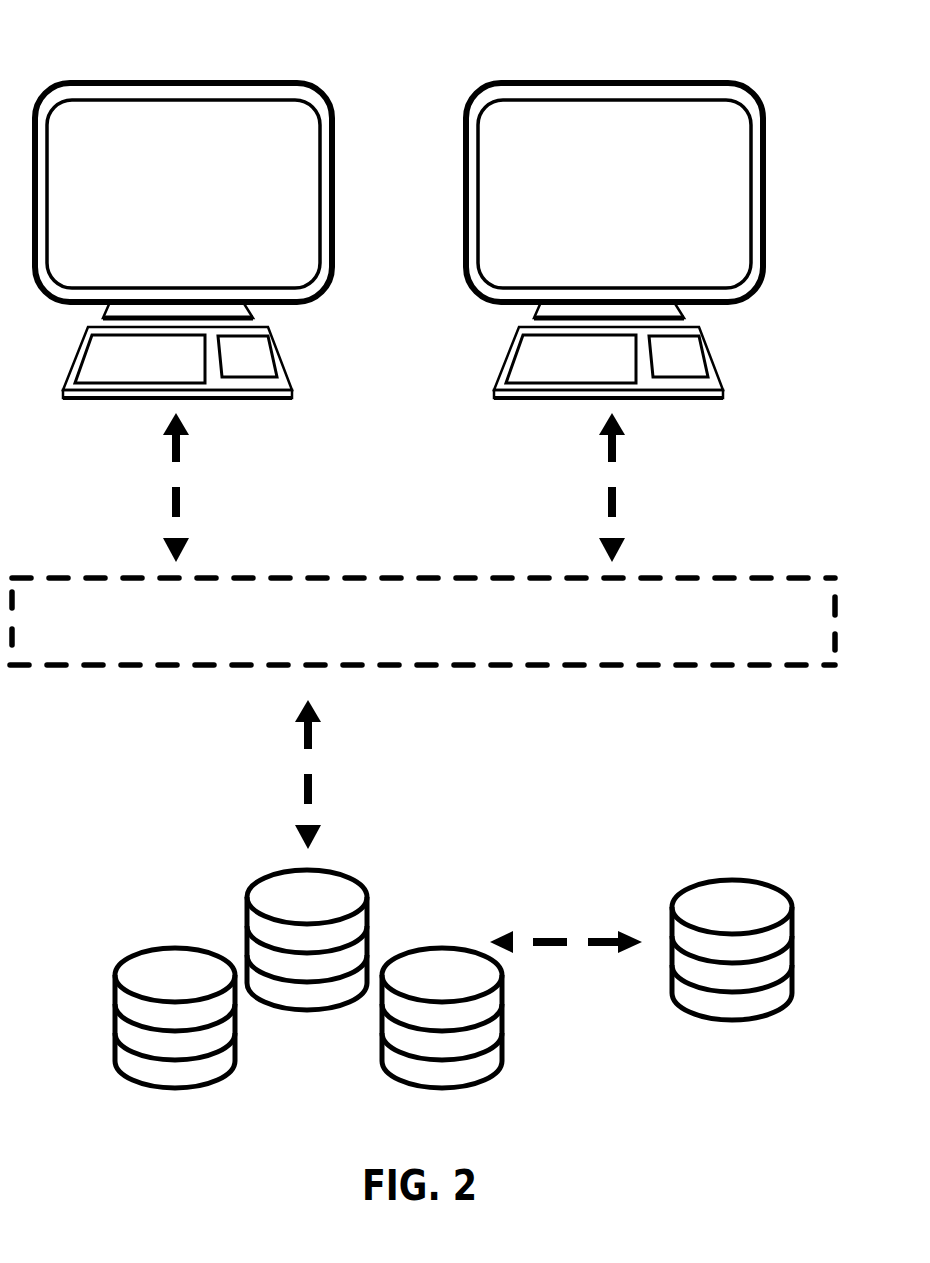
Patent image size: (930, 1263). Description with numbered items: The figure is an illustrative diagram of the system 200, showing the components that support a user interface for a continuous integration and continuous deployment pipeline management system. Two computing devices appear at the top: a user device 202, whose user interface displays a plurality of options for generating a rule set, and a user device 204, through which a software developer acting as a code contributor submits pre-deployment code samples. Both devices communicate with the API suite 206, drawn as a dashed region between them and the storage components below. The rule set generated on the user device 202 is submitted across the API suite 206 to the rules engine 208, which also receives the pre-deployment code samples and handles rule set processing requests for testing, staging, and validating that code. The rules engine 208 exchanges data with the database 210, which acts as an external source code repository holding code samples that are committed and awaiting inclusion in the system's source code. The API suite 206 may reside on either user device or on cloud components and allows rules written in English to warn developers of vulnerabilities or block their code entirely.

The system 200 is at (423, 43).
The user device 202 is at (276, 178).
The user device 204 is at (708, 180).
The API suite 206 is at (393, 631).
The rules engine 208 is at (197, 898).
The database 210 is at (697, 855).